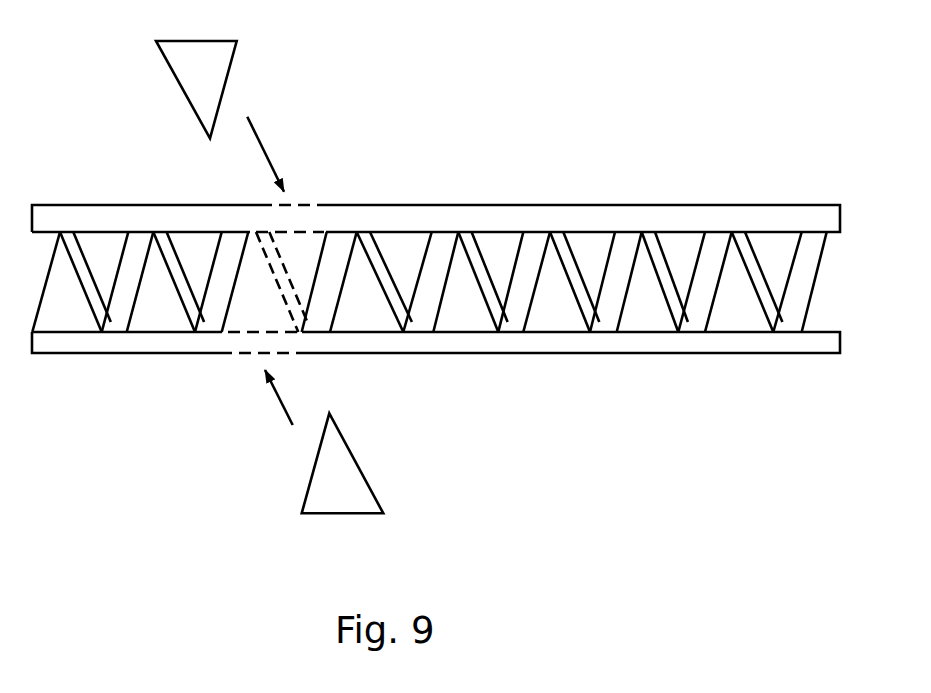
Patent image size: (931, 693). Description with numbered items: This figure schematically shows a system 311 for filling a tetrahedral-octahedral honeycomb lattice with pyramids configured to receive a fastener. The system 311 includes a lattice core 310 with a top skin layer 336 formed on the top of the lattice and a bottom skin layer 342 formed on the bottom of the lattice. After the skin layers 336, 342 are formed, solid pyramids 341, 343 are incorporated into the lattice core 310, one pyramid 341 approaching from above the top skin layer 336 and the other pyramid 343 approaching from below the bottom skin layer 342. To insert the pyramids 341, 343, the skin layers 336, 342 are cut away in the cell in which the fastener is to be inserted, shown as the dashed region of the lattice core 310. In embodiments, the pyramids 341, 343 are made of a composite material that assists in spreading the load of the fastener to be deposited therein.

The lattice core 310 is at (442, 230).
The system 311 is at (436, 278).
The top skin layer 336 is at (680, 206).
The bottom skin layer 342 is at (155, 354).
The solid pyramid 341 is at (229, 73).
The solid pyramid 343 is at (310, 480).